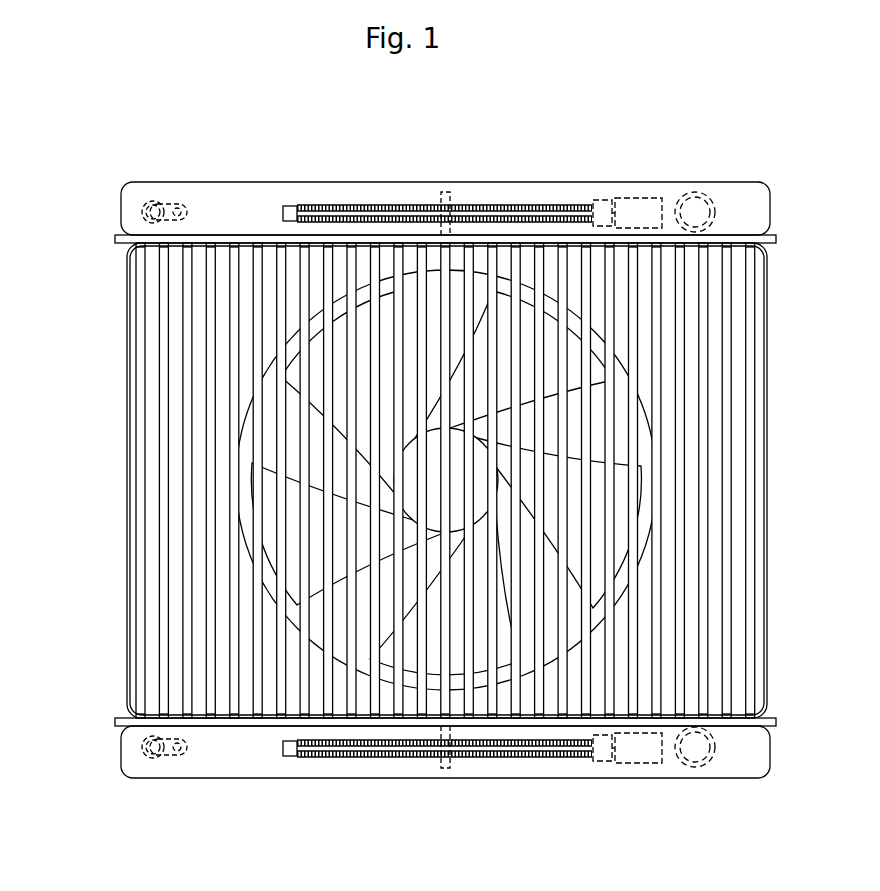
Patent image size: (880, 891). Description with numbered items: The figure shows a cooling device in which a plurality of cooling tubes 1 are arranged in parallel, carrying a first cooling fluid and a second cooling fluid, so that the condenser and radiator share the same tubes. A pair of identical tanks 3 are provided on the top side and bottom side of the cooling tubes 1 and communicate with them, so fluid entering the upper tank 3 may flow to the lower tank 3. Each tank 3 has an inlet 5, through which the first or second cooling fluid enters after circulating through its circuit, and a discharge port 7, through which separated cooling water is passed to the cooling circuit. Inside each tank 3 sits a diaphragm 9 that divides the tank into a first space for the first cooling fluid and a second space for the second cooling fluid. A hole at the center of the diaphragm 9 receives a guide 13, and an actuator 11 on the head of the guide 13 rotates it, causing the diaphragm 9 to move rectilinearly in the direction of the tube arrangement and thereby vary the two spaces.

The cooling tubes 1 is at (148, 458).
The tank 3 is at (234, 197).
The inlet 5 is at (155, 203).
The discharge port 7 is at (152, 760).
The diaphragm 9 is at (445, 200).
The actuator 11 is at (638, 205).
The guide 13 is at (520, 205).